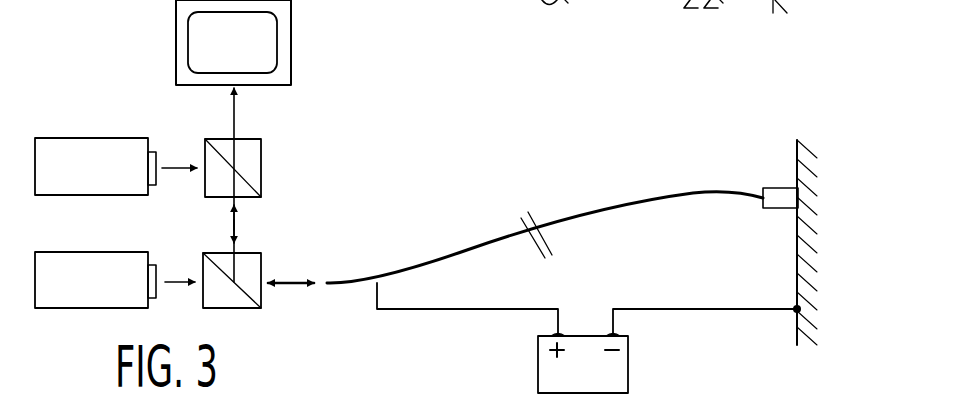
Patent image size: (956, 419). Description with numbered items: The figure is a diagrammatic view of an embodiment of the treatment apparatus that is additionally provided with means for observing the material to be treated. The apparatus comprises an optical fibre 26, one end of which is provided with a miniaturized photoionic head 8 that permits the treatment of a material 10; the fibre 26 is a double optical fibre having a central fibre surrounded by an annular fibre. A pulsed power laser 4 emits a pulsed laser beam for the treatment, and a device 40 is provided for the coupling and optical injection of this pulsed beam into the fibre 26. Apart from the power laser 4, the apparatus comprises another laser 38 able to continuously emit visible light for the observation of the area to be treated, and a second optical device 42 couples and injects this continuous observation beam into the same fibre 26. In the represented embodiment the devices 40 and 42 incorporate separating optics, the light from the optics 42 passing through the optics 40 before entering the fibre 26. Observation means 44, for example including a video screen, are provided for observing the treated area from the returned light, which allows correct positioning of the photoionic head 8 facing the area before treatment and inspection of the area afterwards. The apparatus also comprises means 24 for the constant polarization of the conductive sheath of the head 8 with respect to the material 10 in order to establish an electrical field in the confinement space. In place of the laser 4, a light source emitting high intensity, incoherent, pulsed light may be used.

The observation means 44 is at (183, 43).
The laser 38 is at (123, 145).
The second optical device 42 is at (257, 152).
The device for coupling and optical injection 40 is at (257, 262).
The power laser 4 is at (146, 222).
The optical fibre 26 is at (615, 202).
The means for constant polarization 24 is at (623, 363).
The photoionic head 8 is at (775, 190).
The material 10 is at (808, 199).